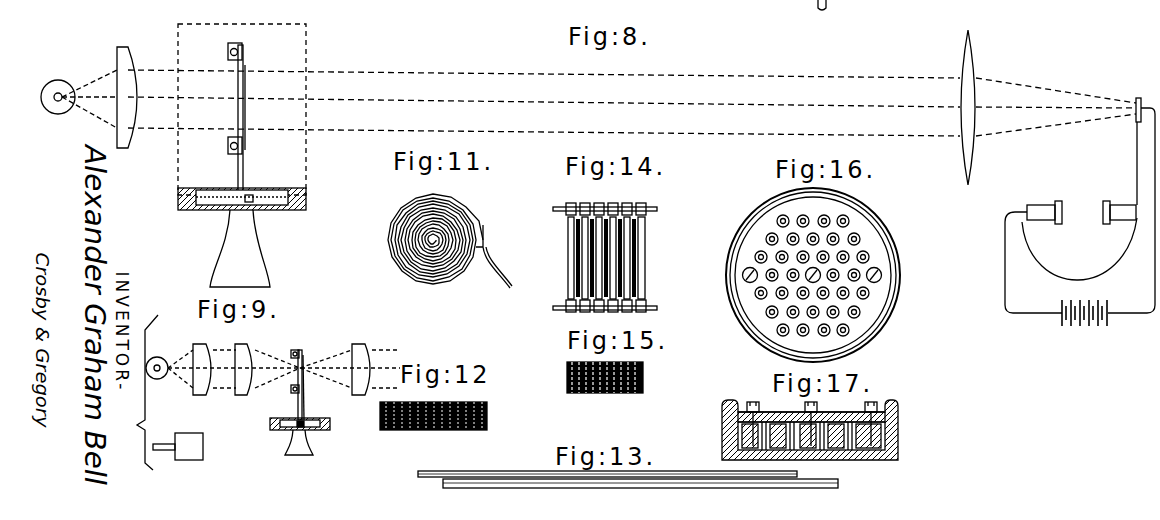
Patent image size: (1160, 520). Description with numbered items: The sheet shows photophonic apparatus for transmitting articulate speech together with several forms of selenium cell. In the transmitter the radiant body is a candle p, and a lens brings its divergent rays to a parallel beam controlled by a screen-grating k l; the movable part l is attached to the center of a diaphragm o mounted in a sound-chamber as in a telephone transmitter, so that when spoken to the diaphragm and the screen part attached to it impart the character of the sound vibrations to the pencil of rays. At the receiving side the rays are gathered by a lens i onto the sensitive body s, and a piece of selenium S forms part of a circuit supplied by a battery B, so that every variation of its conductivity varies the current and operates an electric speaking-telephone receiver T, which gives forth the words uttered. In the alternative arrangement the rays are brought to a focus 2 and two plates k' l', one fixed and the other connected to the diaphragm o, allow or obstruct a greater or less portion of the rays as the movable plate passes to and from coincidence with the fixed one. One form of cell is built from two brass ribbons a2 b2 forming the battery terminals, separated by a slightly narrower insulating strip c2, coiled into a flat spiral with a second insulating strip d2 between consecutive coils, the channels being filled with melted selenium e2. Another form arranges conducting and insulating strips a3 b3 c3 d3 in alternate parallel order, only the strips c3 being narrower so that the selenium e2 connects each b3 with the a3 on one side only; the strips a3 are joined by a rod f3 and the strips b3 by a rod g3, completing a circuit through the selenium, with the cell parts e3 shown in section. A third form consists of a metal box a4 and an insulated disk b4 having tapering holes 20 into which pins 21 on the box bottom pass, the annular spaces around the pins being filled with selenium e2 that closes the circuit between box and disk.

In FIG. 8, the candle p is at (60, 92).
In FIG. 9, the candle p is at (159, 364).
In FIG. 8, the fixed part of screen-grating k is at (230, 120).
In FIG. 8, the movable part of screen-grating l is at (250, 107).
In FIG. 8, the diaphragm o is at (254, 193).
In FIG. 9, the diaphragm o is at (305, 421).
In FIG. 8, the receiving lens i is at (975, 55).
In FIG. 8, the selenium cell / sensitive strip s is at (1136, 100).
In FIG. 11, the selenium cell / sensitive strip s is at (386, 220).
In FIG. 8, the electric speaking-telephone receiver T is at (1079, 201).
In FIG. 8, the battery B is at (1084, 321).
In FIG. 9, the fixed plate k' is at (286, 385).
In FIG. 9, the movable plate l' is at (236, 419).
In FIG. 9, the focus 2 is at (305, 364).
In FIG. 9, the conducting ribbon a2 is at (396, 432).
In FIG. 11, the conducting ribbon a2 is at (492, 260).
In FIG. 12, the conducting ribbon a2 is at (381, 414).
In FIG. 13, the conducting ribbon a2 is at (839, 486).
In FIG. 11, the conducting ribbon b2 is at (481, 262).
In FIG. 12, the conducting ribbon b2 is at (440, 402).
In FIG. 13, the conducting ribbon b2 is at (420, 477).
In FIG. 12, the insulating strip c2 is at (412, 430).
In FIG. 13, the insulating strip c2 is at (830, 484).
In FIG. 13, the second insulating strip d2 is at (668, 473).
In FIG. 12, the selenium e2 is at (412, 402).
In FIG. 14, the selenium e2 is at (646, 242).
In FIG. 15, the selenium e2 is at (572, 362).
In FIG. 16, the selenium e2 is at (812, 275).
In FIG. 17, the selenium e2 is at (811, 436).
In FIG. 12, the selenium cell S is at (442, 416).
In FIG. 14, the conducting strip a3 is at (646, 262).
In FIG. 15, the conducting strip a3 is at (592, 363).
In FIG. 14, the conducting strip b3 is at (578, 205).
In FIG. 15, the conducting strip b3 is at (638, 363).
In FIG. 15, the insulating strip c3 is at (612, 394).
In FIG. 14, the insulating strip d3 is at (638, 288).
In FIG. 15, the insulating strip d3 is at (582, 394).
In FIG. 15, the cell terminal e3 is at (638, 394).
In FIG. 14, the rod f3 is at (553, 309).
In FIG. 14, the rod g3 is at (553, 209).
In FIG. 16, the metal box a4 is at (825, 275).
In FIG. 17, the metal box a4 is at (893, 438).
In FIG. 17, the disk b4 is at (893, 420).
In FIG. 16, the tapering holes 20 is at (869, 293).
In FIG. 17, the tapering holes 20 is at (762, 412).
In FIG. 16, the pins 21 is at (860, 239).
In FIG. 17, the pins 21 is at (852, 437).